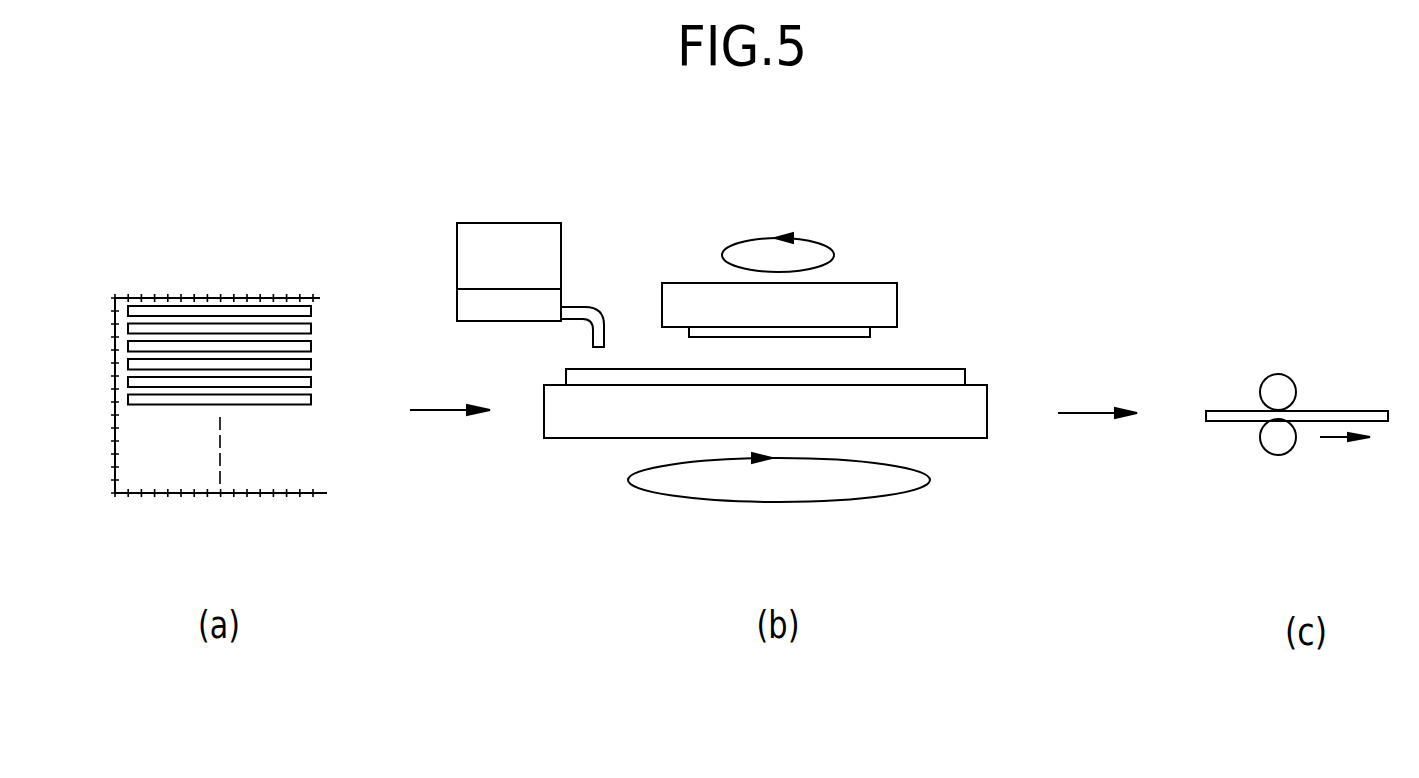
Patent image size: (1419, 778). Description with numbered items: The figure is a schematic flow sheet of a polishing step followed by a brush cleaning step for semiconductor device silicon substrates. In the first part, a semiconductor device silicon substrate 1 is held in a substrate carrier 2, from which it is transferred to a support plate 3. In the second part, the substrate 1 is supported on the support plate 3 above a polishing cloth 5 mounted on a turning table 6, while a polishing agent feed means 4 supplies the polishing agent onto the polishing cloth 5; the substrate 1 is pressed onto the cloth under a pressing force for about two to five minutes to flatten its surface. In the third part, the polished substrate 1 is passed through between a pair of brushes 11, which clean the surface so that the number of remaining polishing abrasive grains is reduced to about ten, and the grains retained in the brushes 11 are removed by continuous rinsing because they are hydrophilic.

The semiconductor device silicon substrate 1 is at (280, 406).
The substrate carrier 2 is at (224, 298).
The support plate 3 is at (872, 292).
The polishing agent feed means 4 is at (511, 223).
The polishing cloth 5 is at (965, 378).
The turning table 6 is at (958, 428).
The brushes 11 is at (1278, 378).